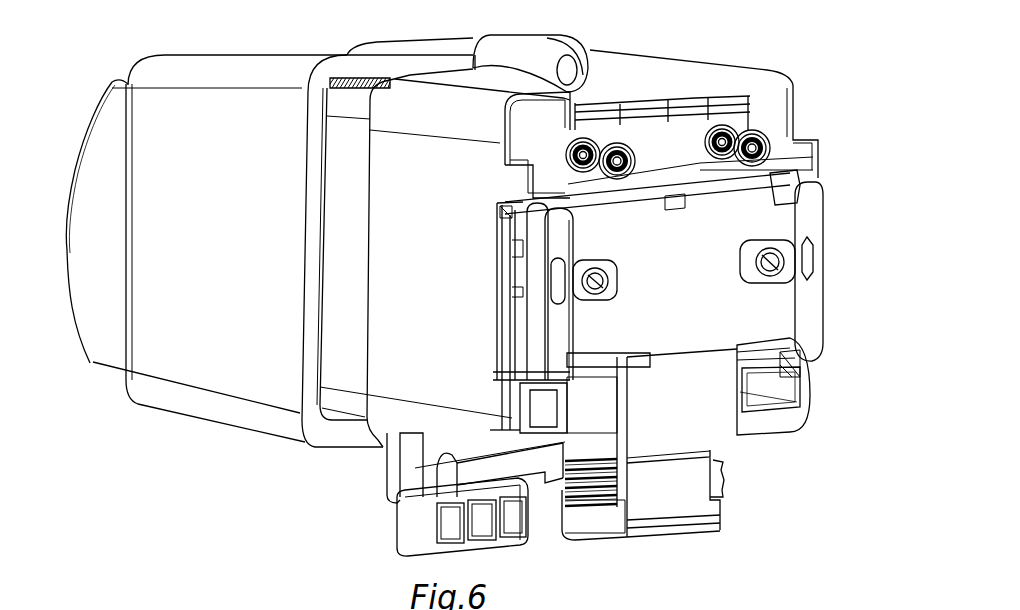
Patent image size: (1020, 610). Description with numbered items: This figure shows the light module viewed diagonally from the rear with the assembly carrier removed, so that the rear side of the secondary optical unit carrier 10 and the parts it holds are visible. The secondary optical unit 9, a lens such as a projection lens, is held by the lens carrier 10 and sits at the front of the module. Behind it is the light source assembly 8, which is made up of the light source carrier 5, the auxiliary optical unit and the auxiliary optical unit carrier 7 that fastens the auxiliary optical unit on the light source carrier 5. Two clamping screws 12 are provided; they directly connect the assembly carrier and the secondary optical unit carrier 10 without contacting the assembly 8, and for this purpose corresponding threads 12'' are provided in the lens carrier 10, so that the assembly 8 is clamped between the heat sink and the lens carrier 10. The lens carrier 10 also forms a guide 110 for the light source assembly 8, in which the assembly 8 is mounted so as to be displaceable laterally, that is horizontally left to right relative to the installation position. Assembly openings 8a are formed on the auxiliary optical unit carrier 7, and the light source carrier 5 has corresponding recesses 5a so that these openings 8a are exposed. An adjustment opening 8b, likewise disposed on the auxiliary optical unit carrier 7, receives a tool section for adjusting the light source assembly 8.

The light source carrier 5 is at (672, 408).
The recesses 5a is at (618, 283).
The auxiliary optical unit carrier 7 is at (555, 340).
The light source assembly 8 is at (577, 414).
The assembly openings 8a is at (785, 270).
The adjustment opening 8b is at (547, 296).
The secondary optical unit 9 is at (108, 328).
The secondary optical unit carrier 10 is at (222, 362).
The clamping screws 12 is at (724, 89).
The threads 12'' is at (683, 86).
The guide 110 is at (503, 210).